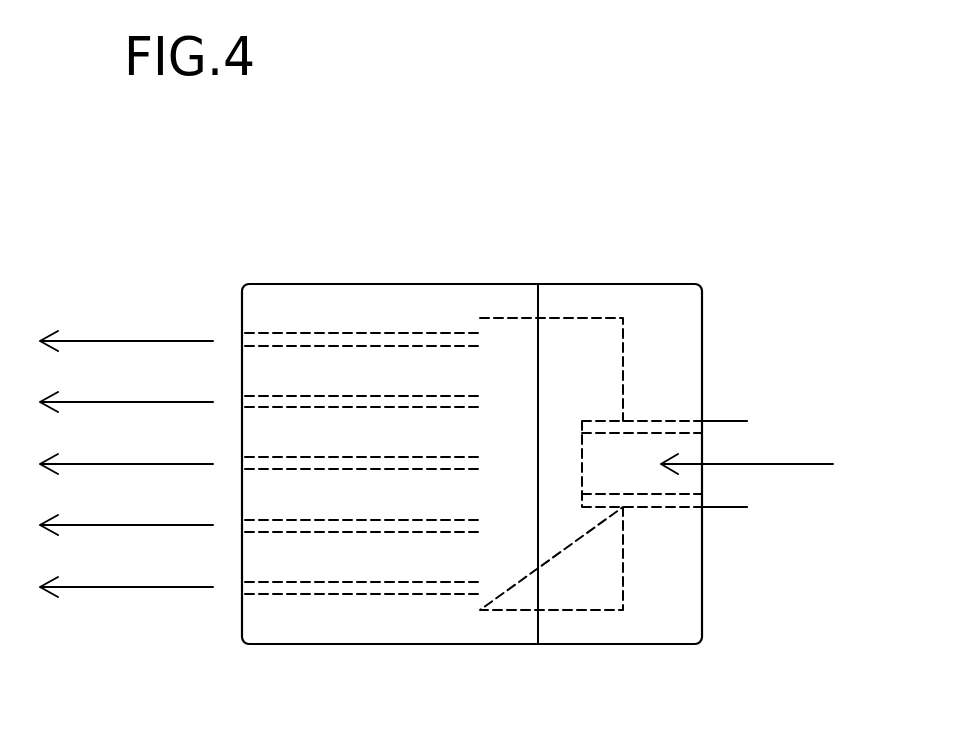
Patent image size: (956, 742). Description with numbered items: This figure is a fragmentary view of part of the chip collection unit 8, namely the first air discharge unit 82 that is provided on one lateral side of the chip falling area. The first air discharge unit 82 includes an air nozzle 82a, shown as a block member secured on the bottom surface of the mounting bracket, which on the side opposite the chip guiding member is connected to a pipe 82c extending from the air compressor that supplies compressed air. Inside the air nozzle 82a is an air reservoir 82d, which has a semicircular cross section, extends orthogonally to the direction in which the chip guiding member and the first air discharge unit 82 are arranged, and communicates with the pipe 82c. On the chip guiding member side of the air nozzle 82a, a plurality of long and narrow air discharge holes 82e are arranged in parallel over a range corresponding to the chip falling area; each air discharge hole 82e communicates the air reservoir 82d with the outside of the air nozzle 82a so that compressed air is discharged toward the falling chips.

The chip collection unit 8 is at (671, 175).
The first air discharge unit 82 is at (716, 259).
The air nozzle 82a is at (480, 283).
The pipe 82c is at (737, 421).
The air reservoir 82d is at (556, 611).
The air discharge holes 82e is at (418, 396).